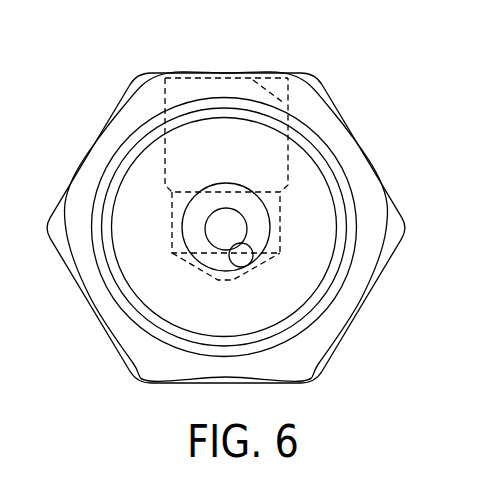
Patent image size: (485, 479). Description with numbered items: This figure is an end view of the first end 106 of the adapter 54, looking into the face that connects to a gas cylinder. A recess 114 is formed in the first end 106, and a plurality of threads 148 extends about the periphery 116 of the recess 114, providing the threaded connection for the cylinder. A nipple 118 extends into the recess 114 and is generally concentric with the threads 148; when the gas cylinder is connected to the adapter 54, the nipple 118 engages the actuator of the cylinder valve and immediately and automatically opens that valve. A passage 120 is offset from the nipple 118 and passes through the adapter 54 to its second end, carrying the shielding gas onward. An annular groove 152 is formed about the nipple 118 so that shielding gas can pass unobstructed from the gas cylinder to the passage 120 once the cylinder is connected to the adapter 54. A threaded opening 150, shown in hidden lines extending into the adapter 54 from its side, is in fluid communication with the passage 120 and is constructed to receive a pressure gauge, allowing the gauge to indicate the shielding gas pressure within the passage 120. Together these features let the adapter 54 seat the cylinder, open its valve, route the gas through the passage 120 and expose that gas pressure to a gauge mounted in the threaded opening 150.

The adapter 54 is at (322, 80).
The first end 106 is at (376, 124).
The recess 114 is at (297, 300).
The periphery 116 is at (328, 262).
The nipple 118 is at (222, 236).
The passage 120 is at (242, 268).
The threads 148 is at (340, 278).
The threaded opening 150 is at (251, 77).
The annular groove 152 is at (192, 233).